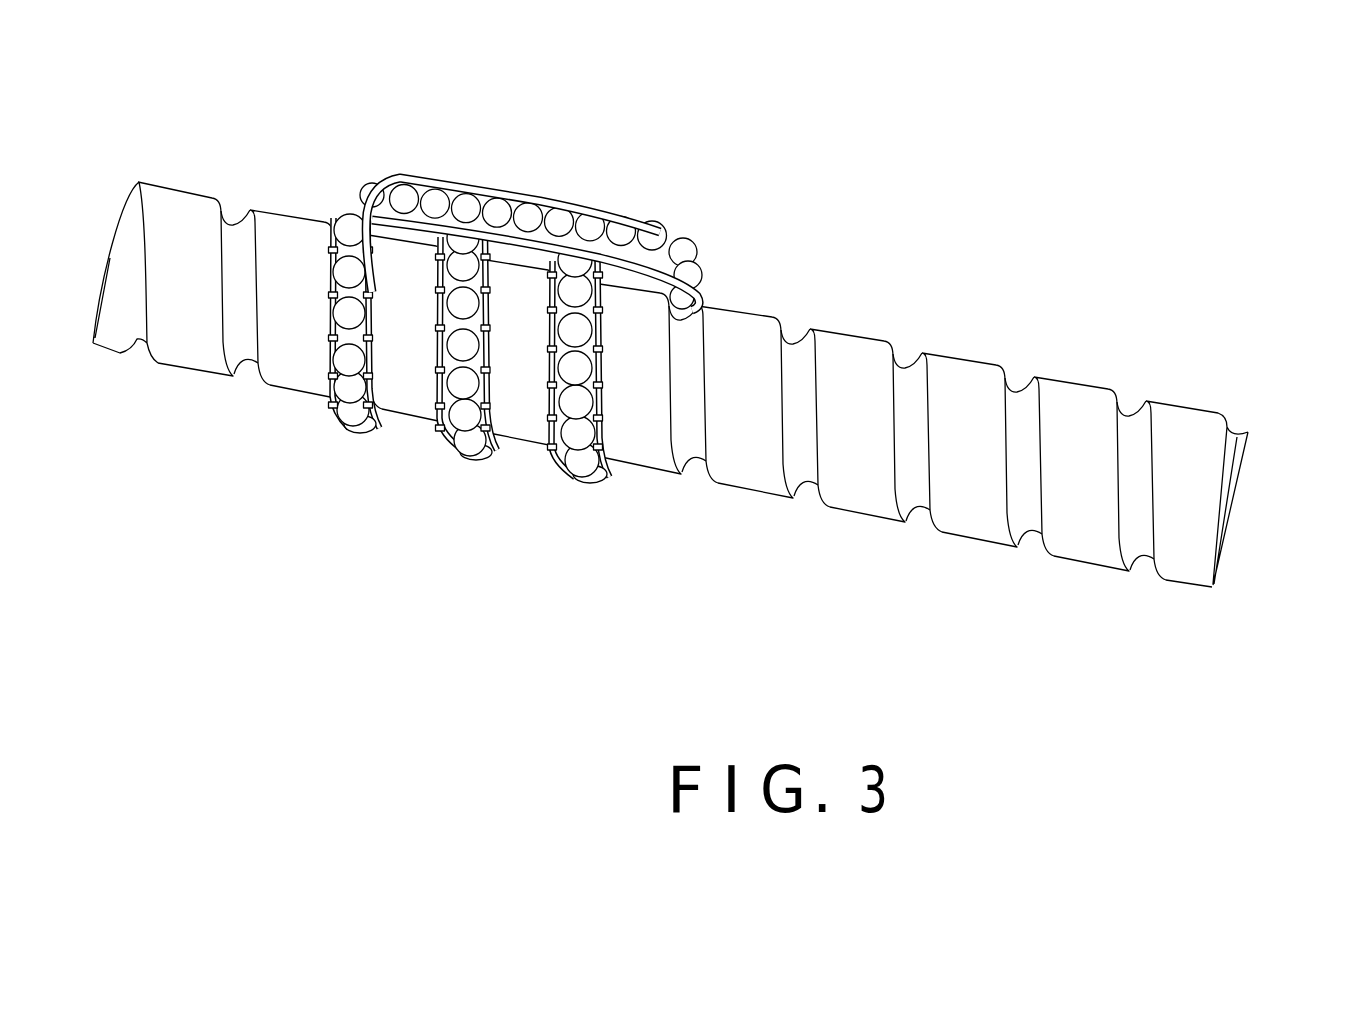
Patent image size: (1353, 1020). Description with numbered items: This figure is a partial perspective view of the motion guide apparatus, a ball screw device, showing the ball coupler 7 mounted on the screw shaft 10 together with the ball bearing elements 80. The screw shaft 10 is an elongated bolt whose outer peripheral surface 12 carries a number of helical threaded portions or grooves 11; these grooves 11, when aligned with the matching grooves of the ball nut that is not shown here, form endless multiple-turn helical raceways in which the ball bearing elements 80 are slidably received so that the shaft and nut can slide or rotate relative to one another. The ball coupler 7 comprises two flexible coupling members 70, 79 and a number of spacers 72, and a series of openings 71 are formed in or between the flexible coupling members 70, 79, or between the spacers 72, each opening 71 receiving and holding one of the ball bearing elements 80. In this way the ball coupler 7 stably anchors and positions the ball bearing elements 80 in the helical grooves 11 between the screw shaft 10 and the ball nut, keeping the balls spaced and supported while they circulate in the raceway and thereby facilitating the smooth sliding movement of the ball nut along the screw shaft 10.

The ball coupler 7 is at (557, 175).
The screw shaft 10 is at (716, 410).
The helical threaded portions or grooves 11 is at (1025, 532).
The outer peripheral surface 12 is at (972, 378).
The flexible coupling member 70 is at (593, 210).
The openings 71 is at (687, 245).
The spacers 72 is at (513, 217).
The flexible coupling member 79 is at (330, 365).
The ball bearing elements 80 is at (497, 203).